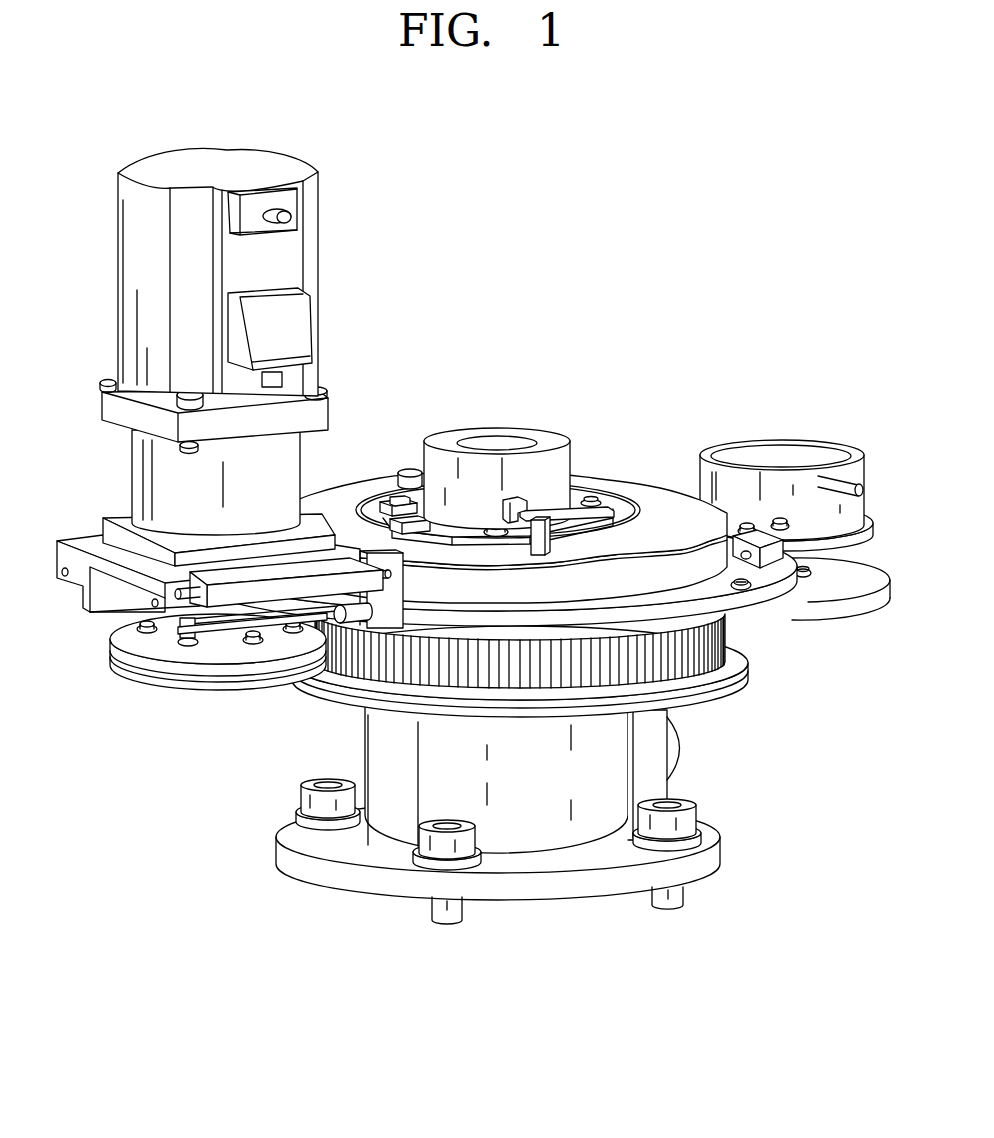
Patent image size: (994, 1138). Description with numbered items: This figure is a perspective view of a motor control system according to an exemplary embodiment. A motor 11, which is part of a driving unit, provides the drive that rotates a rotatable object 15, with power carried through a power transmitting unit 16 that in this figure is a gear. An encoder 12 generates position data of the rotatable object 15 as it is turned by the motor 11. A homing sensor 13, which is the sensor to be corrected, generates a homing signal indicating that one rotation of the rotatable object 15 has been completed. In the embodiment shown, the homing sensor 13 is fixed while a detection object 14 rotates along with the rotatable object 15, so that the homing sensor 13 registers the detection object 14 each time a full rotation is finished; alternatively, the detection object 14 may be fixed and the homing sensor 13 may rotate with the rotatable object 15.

The motor 11 is at (120, 352).
The encoder 12 is at (808, 442).
The homing sensor 13 is at (518, 498).
The detection object 14 is at (541, 518).
The rotatable object 15 is at (687, 563).
The power transmitting unit 16 is at (397, 658).